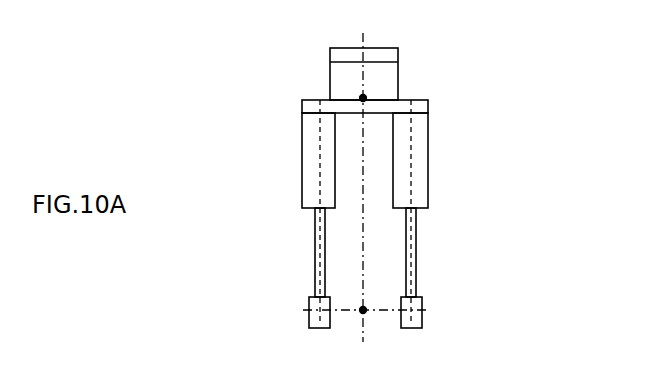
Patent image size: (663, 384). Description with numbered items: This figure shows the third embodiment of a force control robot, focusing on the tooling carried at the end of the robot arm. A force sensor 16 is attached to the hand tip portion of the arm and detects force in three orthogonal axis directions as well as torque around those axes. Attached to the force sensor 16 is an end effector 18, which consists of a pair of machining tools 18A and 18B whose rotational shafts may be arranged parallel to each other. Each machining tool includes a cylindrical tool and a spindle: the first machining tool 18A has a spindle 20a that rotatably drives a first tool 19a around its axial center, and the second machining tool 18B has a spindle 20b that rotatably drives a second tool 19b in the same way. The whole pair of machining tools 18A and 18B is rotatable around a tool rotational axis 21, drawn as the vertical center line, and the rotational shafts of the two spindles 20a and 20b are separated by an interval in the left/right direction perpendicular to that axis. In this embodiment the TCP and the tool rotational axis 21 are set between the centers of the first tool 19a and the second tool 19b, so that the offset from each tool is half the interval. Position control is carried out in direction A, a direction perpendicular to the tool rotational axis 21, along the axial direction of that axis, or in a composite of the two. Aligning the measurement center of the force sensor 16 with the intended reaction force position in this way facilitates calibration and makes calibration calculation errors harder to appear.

The force sensor 16 is at (347, 88).
The end effector 18 is at (465, 152).
The machining tool 18A is at (292, 175).
The machining tool 18B is at (442, 188).
The tool 19a is at (317, 310).
The tool 19b is at (413, 303).
The spindle 20a is at (312, 135).
The spindle 20b is at (424, 132).
The tool rotational axis 21 is at (363, 140).
The element TCP is at (363, 310).
The direction A is at (268, 307).